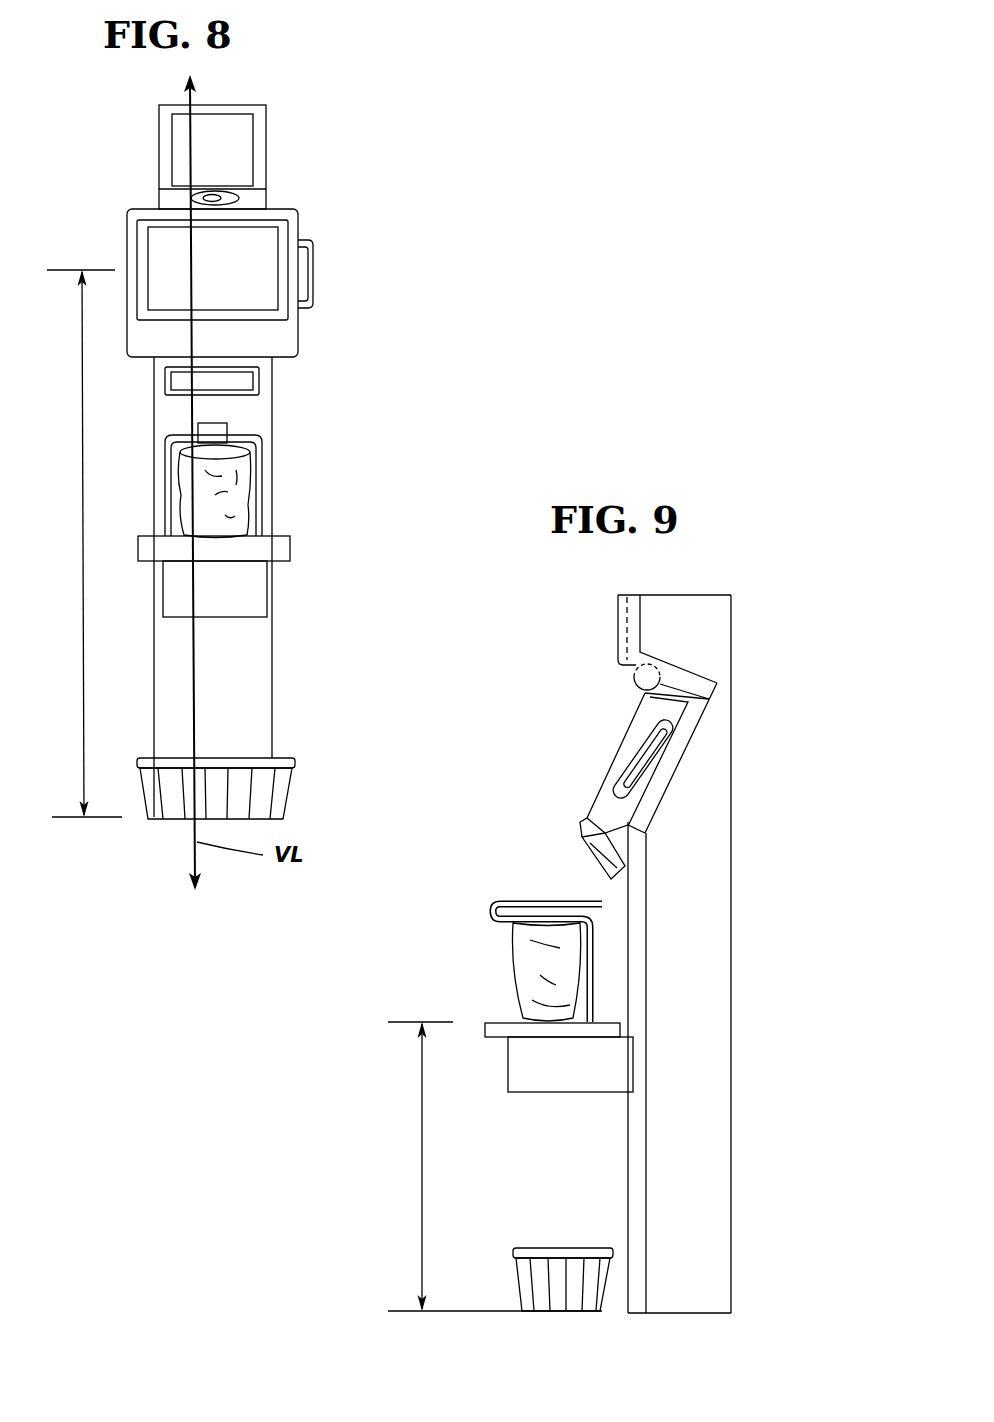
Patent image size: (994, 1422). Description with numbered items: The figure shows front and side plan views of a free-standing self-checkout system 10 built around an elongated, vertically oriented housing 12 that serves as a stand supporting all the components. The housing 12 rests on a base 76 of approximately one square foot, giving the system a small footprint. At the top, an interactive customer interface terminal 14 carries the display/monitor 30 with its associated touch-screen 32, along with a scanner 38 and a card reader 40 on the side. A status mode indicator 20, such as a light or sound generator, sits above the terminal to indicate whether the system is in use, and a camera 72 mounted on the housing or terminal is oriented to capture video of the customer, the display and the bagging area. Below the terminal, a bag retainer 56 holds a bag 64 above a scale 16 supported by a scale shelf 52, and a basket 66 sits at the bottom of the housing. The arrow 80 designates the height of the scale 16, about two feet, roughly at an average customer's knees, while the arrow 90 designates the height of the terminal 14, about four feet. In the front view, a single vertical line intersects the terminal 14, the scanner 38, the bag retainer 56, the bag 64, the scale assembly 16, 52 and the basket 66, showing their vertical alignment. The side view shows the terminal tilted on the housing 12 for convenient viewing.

In FIG. 8, the self-checkout (SCO) system 10 is at (333, 103).
In FIG. 9, the self-checkout (SCO) system 10 is at (728, 545).
In FIG. 8, the housing 12 is at (250, 676).
In FIG. 9, the housing 12 is at (713, 942).
In FIG. 8, the interactive customer interface terminal (ICIT) 14 is at (300, 198).
In FIG. 9, the interactive customer interface terminal (ICIT) 14 is at (627, 707).
In FIG. 8, the scale 16 is at (276, 549).
In FIG. 9, the scale 16 is at (497, 1032).
In FIG. 8, the status mode indicator 20 is at (215, 117).
In FIG. 9, the status mode indicator 20 is at (616, 598).
In FIG. 8, the display/monitor 30 is at (138, 233).
In FIG. 9, the display/monitor 30 is at (630, 760).
In FIG. 8, the touch-screen 32 is at (231, 284).
In FIG. 8, the scanner 38 is at (250, 380).
In FIG. 9, the scanner 38 is at (588, 853).
In FIG. 8, the card reader 40 is at (315, 257).
In FIG. 9, the card reader 40 is at (648, 753).
In FIG. 8, the scale shelf 52 is at (258, 592).
In FIG. 9, the scale shelf 52 is at (558, 1083).
In FIG. 8, the bag retainer 56 is at (263, 441).
In FIG. 9, the bag retainer 56 is at (497, 906).
In FIG. 8, the bag 64 is at (245, 493).
In FIG. 9, the bag 64 is at (520, 965).
In FIG. 8, the basket 66 is at (295, 762).
In FIG. 9, the basket 66 is at (523, 1248).
In FIG. 8, the camera 72 is at (188, 197).
In FIG. 9, the camera 72 is at (634, 683).
In FIG. 8, the base 76 is at (296, 728).
In FIG. 9, the base 76 is at (754, 1291).
In FIG. 9, the scale height arrow 80 is at (484, 1166).
In FIG. 8, the terminal height arrow 90 is at (72, 543).